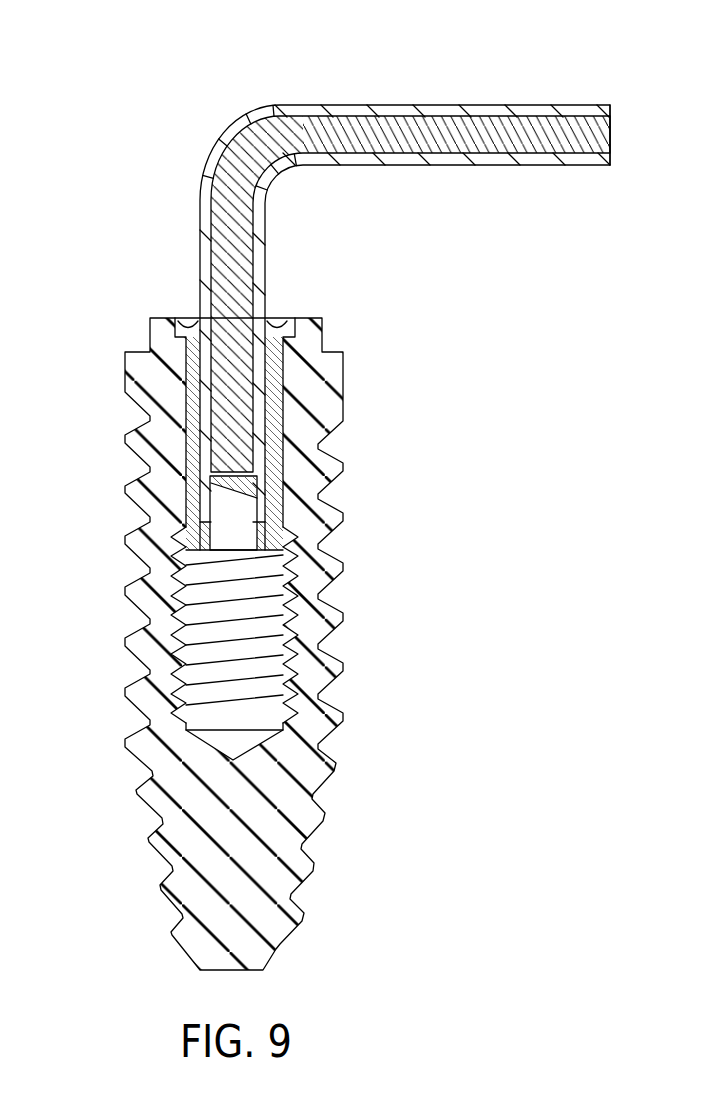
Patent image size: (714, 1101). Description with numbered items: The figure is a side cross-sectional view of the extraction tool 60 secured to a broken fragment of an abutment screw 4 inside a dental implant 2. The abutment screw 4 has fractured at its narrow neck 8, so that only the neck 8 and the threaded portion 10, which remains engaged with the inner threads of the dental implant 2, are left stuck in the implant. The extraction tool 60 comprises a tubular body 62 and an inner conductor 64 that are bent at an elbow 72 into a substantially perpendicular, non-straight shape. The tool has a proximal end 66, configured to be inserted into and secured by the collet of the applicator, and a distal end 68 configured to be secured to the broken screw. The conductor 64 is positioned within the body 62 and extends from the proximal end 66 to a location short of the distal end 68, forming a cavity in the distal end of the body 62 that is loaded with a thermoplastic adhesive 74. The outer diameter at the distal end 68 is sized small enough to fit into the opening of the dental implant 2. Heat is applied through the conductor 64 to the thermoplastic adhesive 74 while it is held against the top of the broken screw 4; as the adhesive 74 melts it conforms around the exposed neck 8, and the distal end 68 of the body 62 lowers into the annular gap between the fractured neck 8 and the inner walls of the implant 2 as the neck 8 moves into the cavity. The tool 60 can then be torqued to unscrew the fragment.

The dental implant 2 is at (160, 808).
The abutment screw 4 is at (170, 562).
The neck 8 is at (282, 603).
The threaded portion 10 is at (292, 636).
The extraction tool 60 is at (415, 272).
The tubular body 62 is at (527, 105).
The inner conductor 64 is at (358, 125).
The proximal end 66 is at (609, 140).
The distal end 68 is at (165, 522).
The elbow 72 is at (229, 157).
The thermoplastic adhesive 74 is at (318, 452).